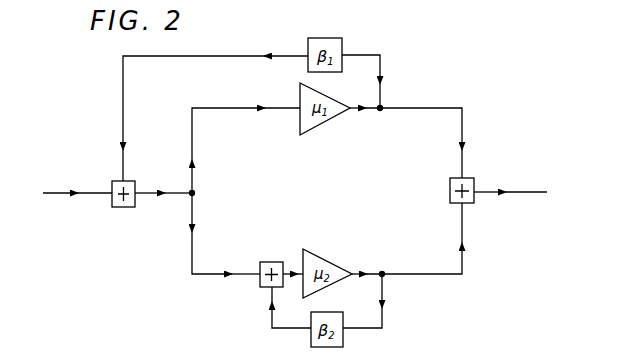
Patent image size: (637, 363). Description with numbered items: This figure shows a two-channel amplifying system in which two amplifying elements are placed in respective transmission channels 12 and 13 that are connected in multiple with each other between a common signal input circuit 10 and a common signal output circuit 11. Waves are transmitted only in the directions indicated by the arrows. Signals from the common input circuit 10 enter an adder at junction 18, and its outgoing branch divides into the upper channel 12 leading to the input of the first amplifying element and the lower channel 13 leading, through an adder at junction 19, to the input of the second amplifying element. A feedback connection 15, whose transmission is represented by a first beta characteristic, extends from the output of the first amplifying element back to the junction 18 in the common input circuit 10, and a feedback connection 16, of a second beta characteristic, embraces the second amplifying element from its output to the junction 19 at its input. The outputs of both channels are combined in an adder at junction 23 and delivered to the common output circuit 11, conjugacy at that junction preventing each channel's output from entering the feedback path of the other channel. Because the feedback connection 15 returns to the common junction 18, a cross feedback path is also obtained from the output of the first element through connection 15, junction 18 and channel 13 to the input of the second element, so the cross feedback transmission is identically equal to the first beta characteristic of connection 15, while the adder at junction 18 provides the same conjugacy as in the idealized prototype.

The common signal input circuit 10 is at (82, 192).
The common signal output circuit 11 is at (517, 192).
The transmission channel 12 is at (222, 108).
The transmission channel 13 is at (207, 276).
The feedback path 15 is at (228, 56).
The feedback path 16 is at (362, 330).
The junction 18 is at (132, 181).
The junction 19 is at (272, 262).
The junction 23 is at (472, 177).